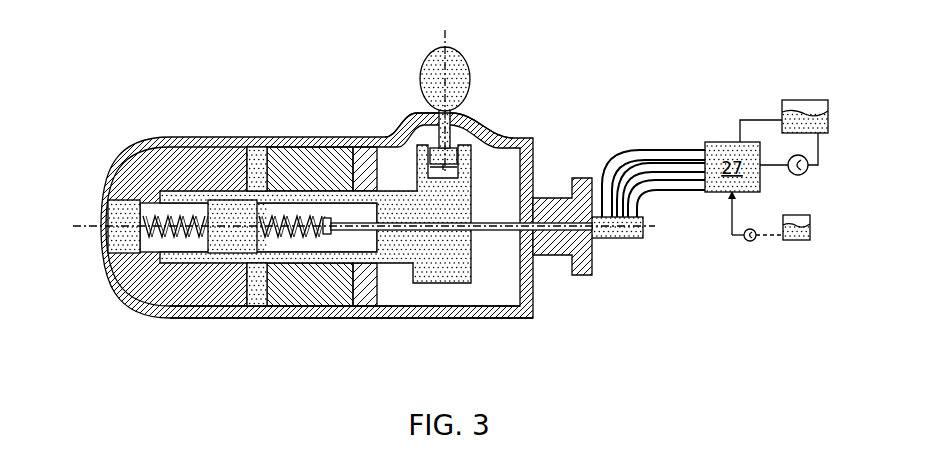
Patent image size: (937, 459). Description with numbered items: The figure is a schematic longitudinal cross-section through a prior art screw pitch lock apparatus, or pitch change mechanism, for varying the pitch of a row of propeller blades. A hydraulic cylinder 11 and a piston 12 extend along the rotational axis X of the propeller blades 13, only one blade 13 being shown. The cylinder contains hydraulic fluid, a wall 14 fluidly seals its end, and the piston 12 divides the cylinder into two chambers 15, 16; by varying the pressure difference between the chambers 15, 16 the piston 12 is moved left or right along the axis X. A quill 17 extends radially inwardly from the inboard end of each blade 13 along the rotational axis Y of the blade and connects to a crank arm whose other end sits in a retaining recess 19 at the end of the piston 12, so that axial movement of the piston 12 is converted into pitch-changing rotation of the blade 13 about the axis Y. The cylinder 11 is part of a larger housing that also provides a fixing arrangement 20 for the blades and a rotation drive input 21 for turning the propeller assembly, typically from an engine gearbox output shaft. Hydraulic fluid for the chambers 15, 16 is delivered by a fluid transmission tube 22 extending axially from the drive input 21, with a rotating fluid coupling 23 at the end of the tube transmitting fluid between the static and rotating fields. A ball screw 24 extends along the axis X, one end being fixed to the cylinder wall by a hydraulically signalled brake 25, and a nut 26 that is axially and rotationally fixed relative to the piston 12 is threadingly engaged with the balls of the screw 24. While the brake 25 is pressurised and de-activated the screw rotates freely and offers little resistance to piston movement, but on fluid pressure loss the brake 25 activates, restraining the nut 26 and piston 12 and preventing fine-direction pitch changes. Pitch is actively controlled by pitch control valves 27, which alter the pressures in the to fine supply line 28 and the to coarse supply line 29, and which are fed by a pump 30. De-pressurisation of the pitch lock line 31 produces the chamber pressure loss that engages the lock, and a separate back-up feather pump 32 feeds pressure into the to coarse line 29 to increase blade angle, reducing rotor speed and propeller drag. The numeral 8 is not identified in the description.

The housing 8 is at (462, 146).
The hydraulic cylinder 11 is at (213, 318).
The piston 12 is at (260, 300).
The propeller blade 13 is at (427, 51).
The wall 14 is at (358, 150).
The chamber 15 is at (210, 152).
The chamber 16 is at (310, 152).
The quill 17 is at (468, 128).
The retaining recess 19 is at (428, 147).
The fixing arrangement 20 is at (466, 111).
The rotation drive input 21 is at (580, 173).
The fluid transmission tube 22 is at (410, 236).
The rotating fluid coupling 23 is at (617, 245).
The ball screw 24 is at (170, 207).
The hydraulically signalled brake 25 is at (122, 242).
The nut 26 is at (225, 243).
The pitch control valves 27 is at (732, 167).
The "to fine" fluid supply line 28 is at (668, 164).
The "to coarse" fluid supply line 29 is at (620, 152).
The pump 30 is at (793, 158).
The "pitch lock" line 31 is at (677, 188).
The back-up feather pump 32 is at (752, 243).
The rotational axis X is at (82, 224).
The rotational axis Y is at (460, 49).